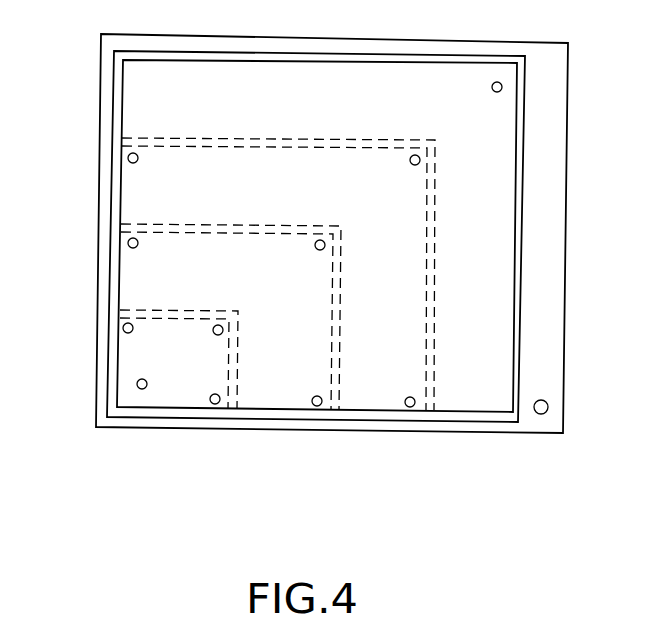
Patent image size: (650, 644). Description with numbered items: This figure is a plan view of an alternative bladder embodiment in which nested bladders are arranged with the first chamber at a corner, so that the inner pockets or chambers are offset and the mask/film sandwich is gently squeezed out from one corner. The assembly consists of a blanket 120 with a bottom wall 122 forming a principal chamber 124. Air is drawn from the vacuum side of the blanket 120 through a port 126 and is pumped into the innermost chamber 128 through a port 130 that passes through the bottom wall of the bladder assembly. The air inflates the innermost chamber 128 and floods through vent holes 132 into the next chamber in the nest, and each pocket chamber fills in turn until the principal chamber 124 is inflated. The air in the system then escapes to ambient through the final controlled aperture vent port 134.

The blanket 120 is at (540, 303).
The bottom wall 122 is at (524, 236).
The principal chamber 124 is at (478, 167).
The port 126 is at (543, 422).
The innermost chamber 128 is at (200, 366).
The port 130 is at (146, 387).
The vent holes 132 is at (127, 334).
The controlled aperture vent port 134 is at (510, 85).